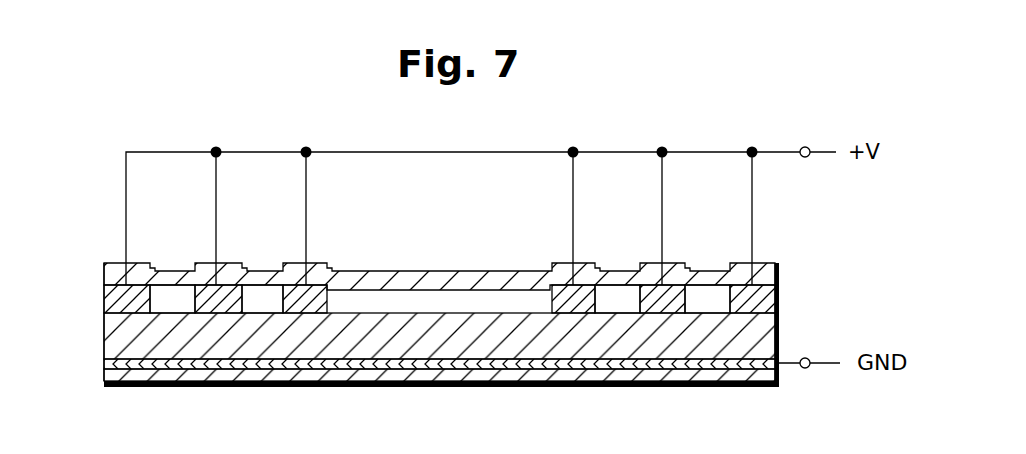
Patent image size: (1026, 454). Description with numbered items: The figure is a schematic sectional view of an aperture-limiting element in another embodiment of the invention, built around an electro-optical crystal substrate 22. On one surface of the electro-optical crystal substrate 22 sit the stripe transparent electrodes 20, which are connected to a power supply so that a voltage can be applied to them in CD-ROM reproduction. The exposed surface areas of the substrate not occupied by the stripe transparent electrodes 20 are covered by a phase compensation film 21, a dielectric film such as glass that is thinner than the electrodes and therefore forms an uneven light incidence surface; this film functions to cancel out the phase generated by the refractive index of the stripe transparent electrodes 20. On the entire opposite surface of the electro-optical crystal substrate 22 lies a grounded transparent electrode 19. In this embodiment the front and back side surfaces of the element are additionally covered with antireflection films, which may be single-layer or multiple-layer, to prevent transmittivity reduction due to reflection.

The grounded transparent electrode 19 is at (362, 366).
The stripe transparent electrode 20 is at (108, 298).
The phase compensation film 21 is at (172, 311).
The electro-optical crystal substrate 22 is at (665, 350).